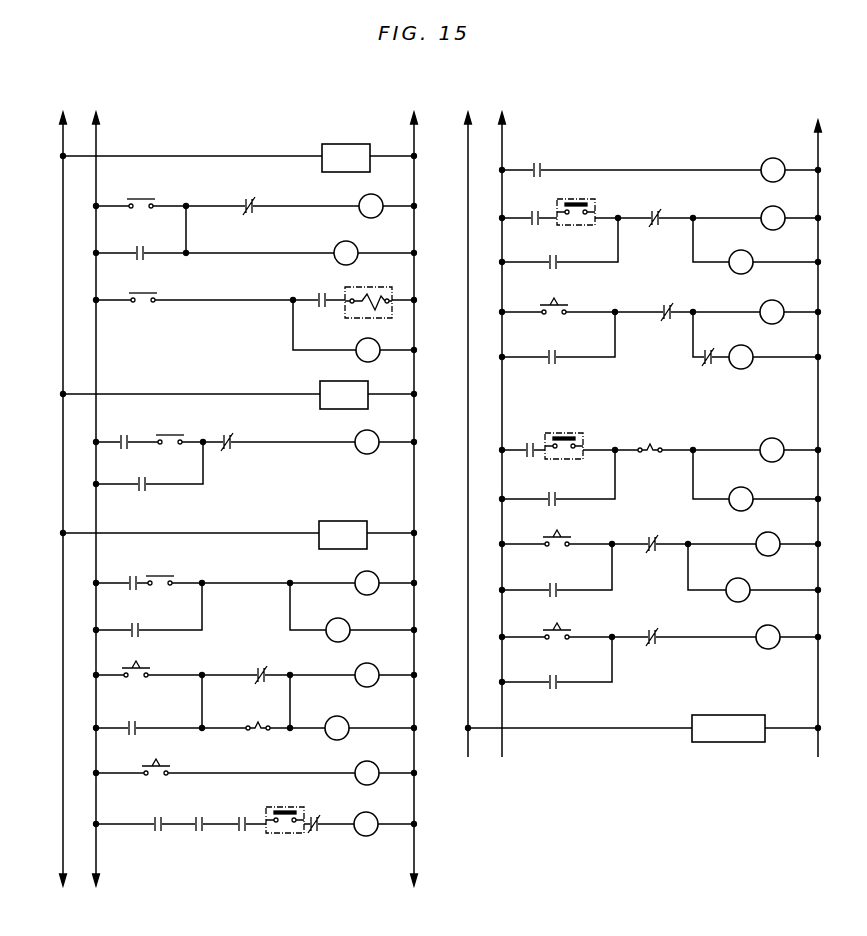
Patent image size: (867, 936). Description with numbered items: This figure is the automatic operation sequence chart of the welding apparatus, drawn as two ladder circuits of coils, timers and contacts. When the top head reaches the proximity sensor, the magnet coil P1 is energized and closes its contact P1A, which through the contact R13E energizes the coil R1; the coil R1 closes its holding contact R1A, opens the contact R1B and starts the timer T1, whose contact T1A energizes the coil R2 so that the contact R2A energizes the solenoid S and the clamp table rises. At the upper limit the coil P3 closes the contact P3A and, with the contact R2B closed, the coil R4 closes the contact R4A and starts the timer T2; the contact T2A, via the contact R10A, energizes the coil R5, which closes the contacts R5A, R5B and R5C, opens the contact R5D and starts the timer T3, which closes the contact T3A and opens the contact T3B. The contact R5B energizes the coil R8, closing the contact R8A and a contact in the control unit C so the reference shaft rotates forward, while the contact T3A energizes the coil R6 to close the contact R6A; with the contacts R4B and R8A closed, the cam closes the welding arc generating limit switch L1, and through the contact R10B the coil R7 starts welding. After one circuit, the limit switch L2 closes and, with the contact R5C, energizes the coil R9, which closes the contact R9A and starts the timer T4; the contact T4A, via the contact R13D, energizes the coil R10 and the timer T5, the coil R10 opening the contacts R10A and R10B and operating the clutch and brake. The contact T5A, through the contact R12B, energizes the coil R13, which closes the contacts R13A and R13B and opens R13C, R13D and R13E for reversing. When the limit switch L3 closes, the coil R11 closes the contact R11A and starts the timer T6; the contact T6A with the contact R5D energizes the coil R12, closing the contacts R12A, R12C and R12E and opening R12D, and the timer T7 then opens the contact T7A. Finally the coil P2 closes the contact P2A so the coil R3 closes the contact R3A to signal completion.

The magnet coil P1 is at (346, 145).
The contact P1A is at (141, 190).
The contact R13E is at (251, 193).
The coil R1 is at (379, 194).
The contact R1A is at (137, 240).
The timer T1 is at (355, 242).
The contact T1A is at (147, 284).
The contact R2A is at (315, 287).
The solenoid S is at (368, 291).
The coil R2 is at (381, 344).
The coil P2 is at (344, 383).
The contact R12E is at (122, 429).
The contact P2A is at (171, 426).
The contact R1B is at (237, 429).
The coil R3 is at (377, 431).
The contact R3A is at (138, 474).
The coil P3 is at (343, 521).
The contact R2B is at (119, 570).
The contact P3A is at (174, 567).
The coil R4 is at (377, 572).
The contact R4A is at (132, 618).
The timer T2 is at (349, 620).
The contact T2A is at (153, 660).
The contact R10A is at (259, 663).
The coil R5 is at (377, 665).
The contact R5A is at (130, 716).
The contact T3B is at (254, 713).
The timer T3 is at (349, 718).
The contact T3A is at (170, 757).
The coil R6 is at (377, 762).
The contact R4B is at (142, 811).
The contact R8A is at (198, 811).
The contact R6A is at (238, 839).
The welding arc generating limit switch L1 is at (285, 808).
The contact R10B is at (329, 839).
The coil R7 is at (379, 812).
The contact R5B is at (535, 156).
The coil R8 is at (771, 158).
The contact R5C is at (527, 205).
The limit switch L2 is at (576, 201).
The contact R13D is at (655, 207).
The coil R9 is at (786, 208).
The contact R9A is at (548, 252).
The timer T4 is at (753, 254).
The contact T4A is at (546, 296).
The contact R13C is at (664, 302).
The coil R10 is at (776, 301).
The contact R12C is at (550, 346).
The contact R12D is at (710, 370).
The timer T5 is at (739, 344).
The contact R13B is at (529, 434).
The limit switch L3 is at (564, 434).
The contact T7A is at (649, 437).
The coil R11 is at (779, 439).
The contact R11A is at (552, 488).
The timer T6 is at (753, 490).
The contact T6A is at (571, 529).
The contact R5D is at (651, 534).
The coil R12 is at (771, 533).
The contact R12A is at (551, 581).
The timer T7 is at (749, 582).
The contact T5A is at (571, 623).
The contact R12B is at (661, 626).
The coil R13 is at (771, 626).
The contact R13A is at (551, 672).
The control unit C is at (728, 717).